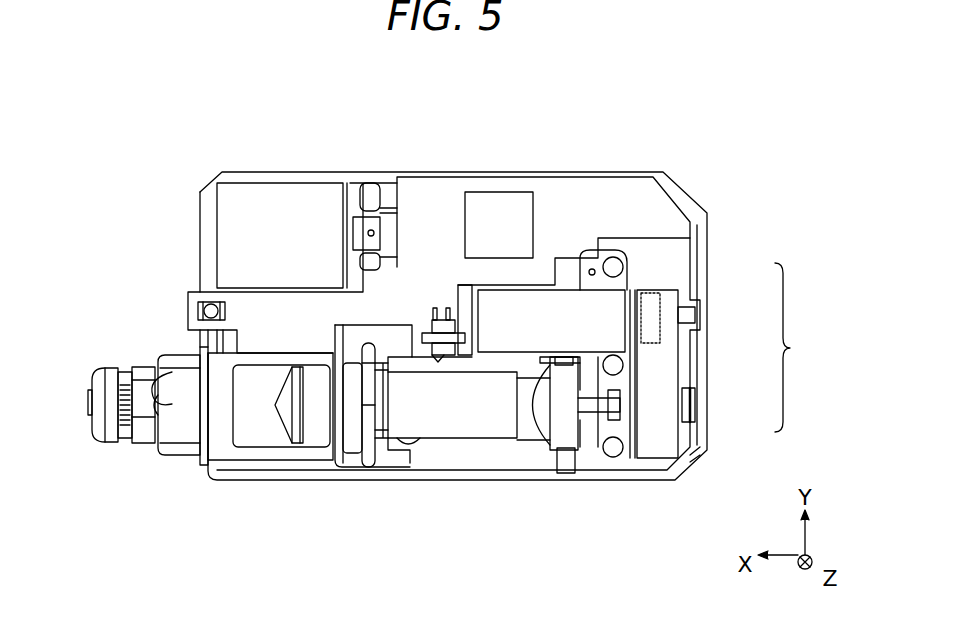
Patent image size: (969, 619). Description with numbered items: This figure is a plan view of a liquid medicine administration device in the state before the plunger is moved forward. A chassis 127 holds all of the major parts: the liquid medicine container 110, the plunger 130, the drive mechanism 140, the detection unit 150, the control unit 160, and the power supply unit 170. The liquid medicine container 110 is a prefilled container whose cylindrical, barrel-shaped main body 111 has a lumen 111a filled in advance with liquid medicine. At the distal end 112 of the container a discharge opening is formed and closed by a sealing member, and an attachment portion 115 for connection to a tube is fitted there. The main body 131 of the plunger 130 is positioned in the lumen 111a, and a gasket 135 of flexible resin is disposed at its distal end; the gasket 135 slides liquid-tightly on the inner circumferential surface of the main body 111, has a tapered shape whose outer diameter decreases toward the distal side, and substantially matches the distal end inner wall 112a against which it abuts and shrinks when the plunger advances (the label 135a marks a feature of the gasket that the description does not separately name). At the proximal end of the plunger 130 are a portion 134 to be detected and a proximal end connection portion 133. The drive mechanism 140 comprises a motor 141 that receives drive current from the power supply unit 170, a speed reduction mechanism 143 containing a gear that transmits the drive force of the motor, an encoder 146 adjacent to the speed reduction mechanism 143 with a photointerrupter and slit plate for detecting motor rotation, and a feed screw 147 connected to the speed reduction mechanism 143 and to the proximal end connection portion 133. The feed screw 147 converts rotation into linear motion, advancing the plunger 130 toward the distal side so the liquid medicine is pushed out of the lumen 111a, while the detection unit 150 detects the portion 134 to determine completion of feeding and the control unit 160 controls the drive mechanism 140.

The chassis 127 is at (604, 158).
The power supply unit 170 is at (285, 217).
The detection unit 150 is at (432, 357).
The control unit 160 is at (503, 222).
The drive mechanism 140 is at (808, 347).
The motor 141 is at (588, 327).
The encoder 146 is at (655, 316).
The speed reduction mechanism 143 is at (648, 360).
The feed screw 147 is at (628, 425).
The portion to be detected 134 is at (582, 400).
The proximal end connection portion 133 is at (555, 418).
The main body 131 is at (490, 420).
The plunger 130 is at (428, 443).
The liquid medicine container 110 is at (250, 427).
The gasket 135 is at (312, 428).
The lens surface 135a is at (273, 430).
The main body 111 is at (187, 452).
The lumen 111a is at (160, 417).
The distal end 112 is at (163, 368).
The distal end inner wall 112a is at (150, 400).
The attachment portion 115 is at (110, 440).